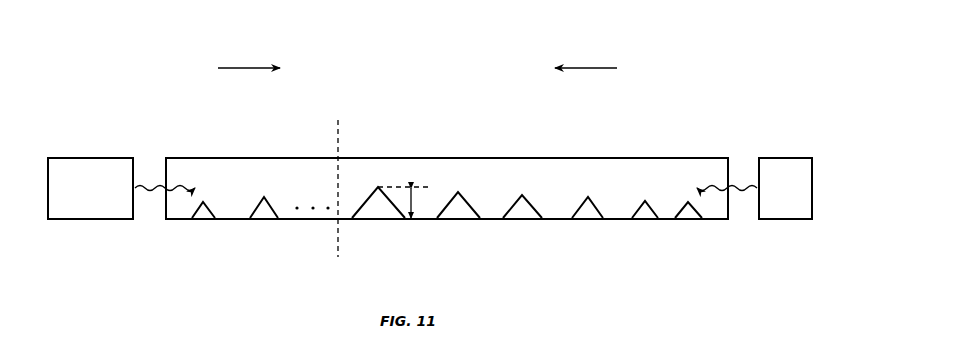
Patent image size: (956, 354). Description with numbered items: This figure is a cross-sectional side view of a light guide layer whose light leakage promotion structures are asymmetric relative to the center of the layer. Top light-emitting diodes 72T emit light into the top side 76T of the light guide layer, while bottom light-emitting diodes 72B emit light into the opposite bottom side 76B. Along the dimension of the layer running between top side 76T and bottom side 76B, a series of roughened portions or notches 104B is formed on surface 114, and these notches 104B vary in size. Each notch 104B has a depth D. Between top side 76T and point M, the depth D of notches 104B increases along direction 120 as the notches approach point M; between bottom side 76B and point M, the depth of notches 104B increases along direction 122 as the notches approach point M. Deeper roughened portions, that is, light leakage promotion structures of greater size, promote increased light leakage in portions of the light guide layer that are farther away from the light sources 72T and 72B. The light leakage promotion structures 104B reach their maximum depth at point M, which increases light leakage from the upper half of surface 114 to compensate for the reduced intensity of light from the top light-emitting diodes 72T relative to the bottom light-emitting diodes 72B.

The direction 120 is at (242, 63).
The direction 122 is at (592, 63).
The top light-emitting diodes 72T is at (90, 213).
The bottom light-emitting diodes 72B is at (789, 213).
The top side 76T is at (165, 170).
The bottom side 76B is at (729, 170).
The surface 114 is at (553, 222).
The light leakage promotion structures 104B is at (263, 222).
The point M is at (341, 150).
The depth D is at (403, 202).